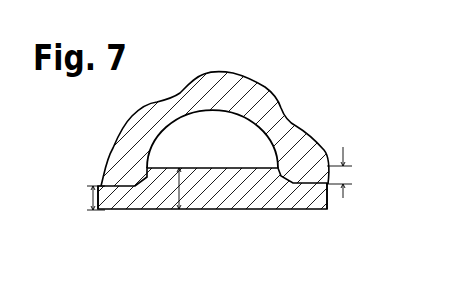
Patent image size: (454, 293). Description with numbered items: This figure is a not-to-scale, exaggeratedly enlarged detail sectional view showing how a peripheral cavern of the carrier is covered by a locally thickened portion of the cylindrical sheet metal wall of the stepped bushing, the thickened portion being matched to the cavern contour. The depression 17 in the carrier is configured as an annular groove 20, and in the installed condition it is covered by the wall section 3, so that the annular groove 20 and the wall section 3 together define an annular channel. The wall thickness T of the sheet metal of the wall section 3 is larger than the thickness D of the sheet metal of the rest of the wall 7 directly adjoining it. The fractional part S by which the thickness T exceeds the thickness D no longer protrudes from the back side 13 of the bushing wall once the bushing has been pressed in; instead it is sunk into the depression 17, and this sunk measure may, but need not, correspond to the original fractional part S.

The wall section 3 is at (252, 184).
The depression 17 is at (227, 125).
The annular groove 20 is at (178, 142).
The back side 13 is at (128, 210).
The rest of the wall 7 is at (327, 198).
The thickness of the sheet metal of the rest of the wall D is at (90, 200).
The wall thickness of the wall section T is at (178, 192).
The fractional part S is at (350, 165).